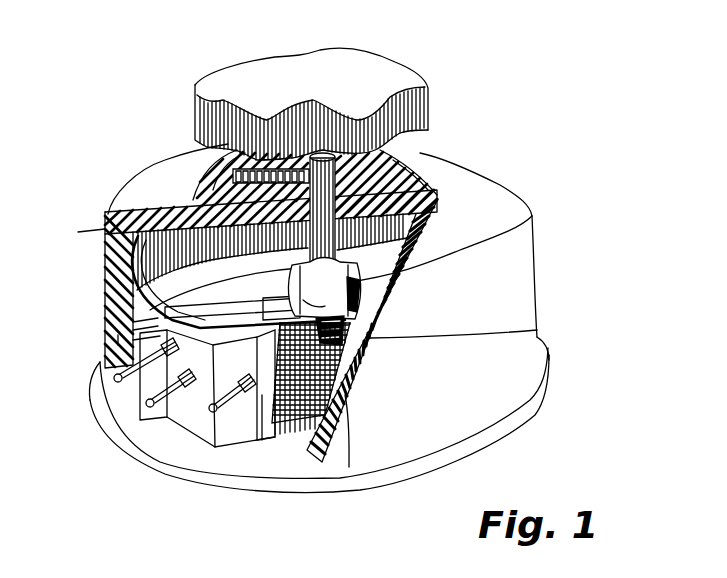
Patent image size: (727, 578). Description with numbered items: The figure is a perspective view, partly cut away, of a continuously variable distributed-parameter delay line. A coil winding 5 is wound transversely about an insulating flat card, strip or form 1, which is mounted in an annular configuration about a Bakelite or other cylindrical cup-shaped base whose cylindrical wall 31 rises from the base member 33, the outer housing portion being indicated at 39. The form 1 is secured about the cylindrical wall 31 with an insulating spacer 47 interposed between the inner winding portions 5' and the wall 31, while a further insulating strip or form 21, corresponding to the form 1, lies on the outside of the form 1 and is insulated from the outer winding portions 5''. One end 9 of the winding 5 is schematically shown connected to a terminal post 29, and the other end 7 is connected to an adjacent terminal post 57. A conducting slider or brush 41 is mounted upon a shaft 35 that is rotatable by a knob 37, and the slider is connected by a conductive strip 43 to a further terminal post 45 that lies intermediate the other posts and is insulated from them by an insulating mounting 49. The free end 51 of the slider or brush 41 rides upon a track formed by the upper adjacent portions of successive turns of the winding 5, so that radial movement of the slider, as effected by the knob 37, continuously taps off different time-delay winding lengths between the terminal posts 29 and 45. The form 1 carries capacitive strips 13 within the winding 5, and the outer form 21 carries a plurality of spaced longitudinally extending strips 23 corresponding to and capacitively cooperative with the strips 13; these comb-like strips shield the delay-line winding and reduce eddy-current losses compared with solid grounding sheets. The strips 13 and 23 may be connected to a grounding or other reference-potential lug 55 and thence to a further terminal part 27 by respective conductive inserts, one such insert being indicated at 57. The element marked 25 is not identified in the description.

The insulating flat card, strip or form 1 is at (265, 325).
The coil winding 5 is at (333, 245).
The winding portions 5' is at (95, 290).
The winding portions 5'' is at (372, 333).
The other end of the winding 7 is at (118, 340).
The one end of the winding 9 is at (262, 400).
The capacitive strips 13 is at (290, 420).
The insulating strip or form 21 is at (244, 388).
The strips 23 is at (334, 398).
The brush screw 25 is at (252, 388).
The terminal part 27 is at (110, 357).
The terminal post 29 is at (225, 405).
The cylindrical wall 31 is at (200, 278).
The cup-shaped base member 33 is at (441, 466).
The shaft 35 is at (377, 167).
The knob 37 is at (403, 78).
The conductive insert 57 is at (133, 387).
The housing 39 is at (520, 263).
The conducting slider or brush 41 is at (345, 280).
The conductive strip 43 is at (286, 320).
The terminal post 45 is at (162, 410).
The insulating spacer 47 is at (107, 272).
The insulating mounting 49 is at (190, 417).
The free end of the slider or brush 51 is at (317, 298).
The grounding or reference-potential lug 55 is at (110, 320).